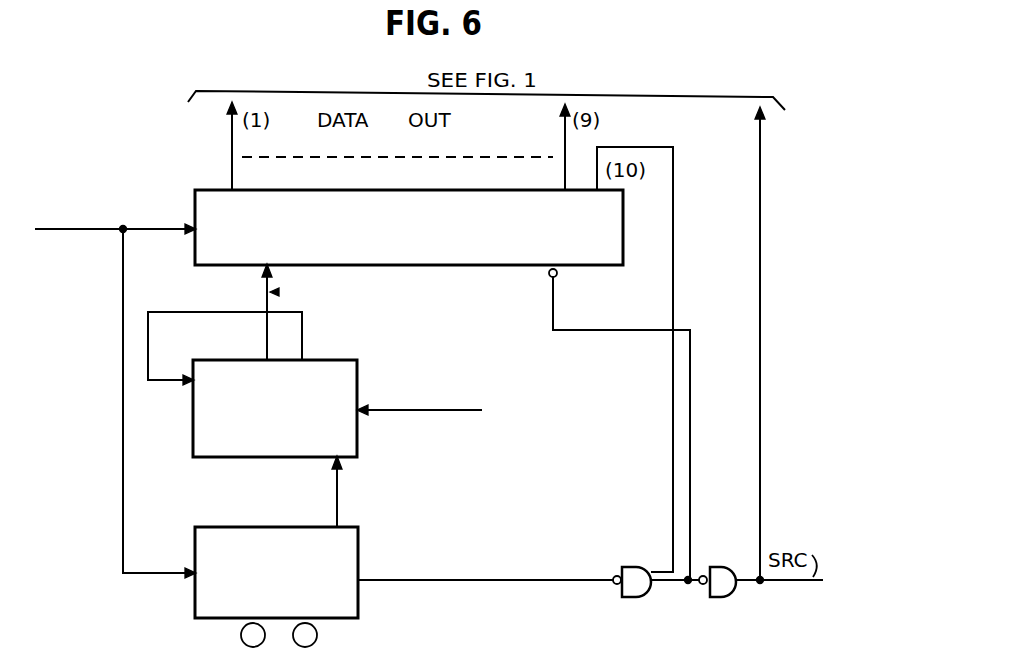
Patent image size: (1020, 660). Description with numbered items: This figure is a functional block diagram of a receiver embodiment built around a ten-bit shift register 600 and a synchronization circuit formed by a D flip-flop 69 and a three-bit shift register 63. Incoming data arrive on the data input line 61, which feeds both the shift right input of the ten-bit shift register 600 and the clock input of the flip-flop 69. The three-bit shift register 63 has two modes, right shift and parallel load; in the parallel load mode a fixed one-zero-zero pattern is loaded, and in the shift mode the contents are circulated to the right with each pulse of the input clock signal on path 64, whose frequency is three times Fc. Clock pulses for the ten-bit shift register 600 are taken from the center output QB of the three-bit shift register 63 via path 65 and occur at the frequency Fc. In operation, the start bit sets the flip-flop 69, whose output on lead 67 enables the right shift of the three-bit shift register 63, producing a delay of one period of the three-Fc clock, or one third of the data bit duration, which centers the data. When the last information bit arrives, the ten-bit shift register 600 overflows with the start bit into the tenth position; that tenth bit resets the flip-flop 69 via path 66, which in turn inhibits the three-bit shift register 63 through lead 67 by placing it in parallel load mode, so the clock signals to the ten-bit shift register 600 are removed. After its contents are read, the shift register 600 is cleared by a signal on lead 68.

The 10-bit shift register 600 is at (623, 242).
The data input line 61 is at (86, 231).
The 3-bit shift register 63 is at (357, 381).
The path 64 is at (424, 404).
The path 65 is at (262, 297).
The path 66 is at (549, 578).
The lead 67 is at (338, 492).
The lead 68 is at (554, 316).
The D flip-flop 69 is at (275, 535).